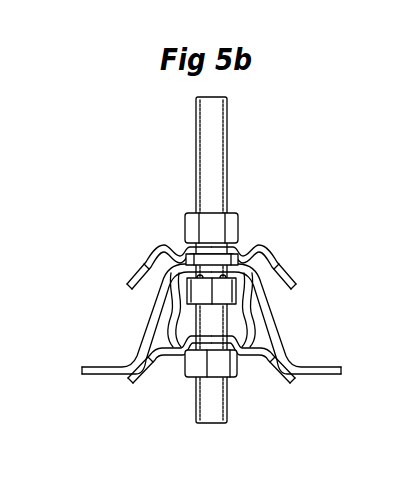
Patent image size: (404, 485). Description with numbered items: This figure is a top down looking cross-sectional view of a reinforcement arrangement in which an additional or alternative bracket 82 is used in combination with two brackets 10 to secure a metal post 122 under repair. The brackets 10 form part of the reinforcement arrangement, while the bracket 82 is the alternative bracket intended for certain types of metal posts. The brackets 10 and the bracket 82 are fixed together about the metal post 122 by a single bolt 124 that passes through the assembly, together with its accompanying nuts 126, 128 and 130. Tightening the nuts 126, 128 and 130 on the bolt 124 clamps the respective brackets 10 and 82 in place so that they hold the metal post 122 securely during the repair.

The bolt 124 is at (228, 147).
The nut 130 is at (184, 222).
The bracket 10 is at (288, 252).
The nut 128 is at (200, 296).
The bracket 82 is at (177, 332).
The metal post 122 is at (276, 315).
The nut 126 is at (187, 381).